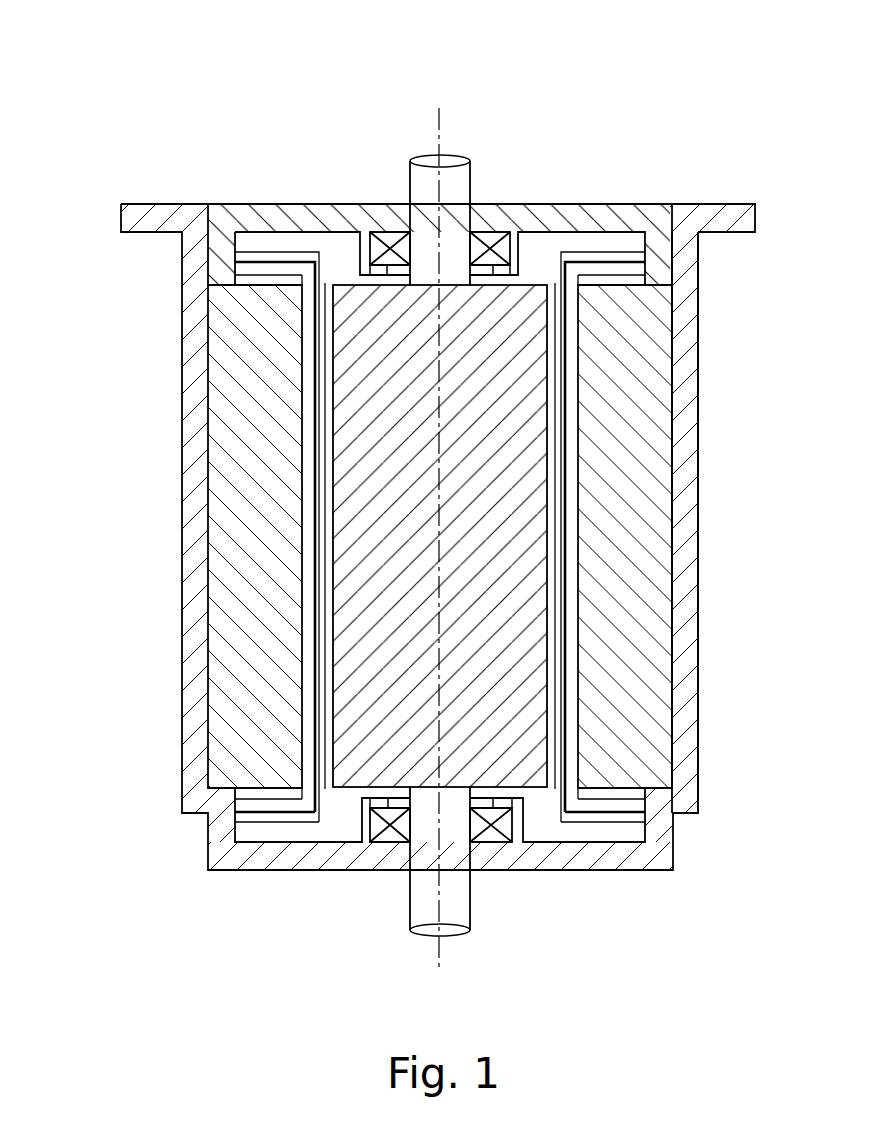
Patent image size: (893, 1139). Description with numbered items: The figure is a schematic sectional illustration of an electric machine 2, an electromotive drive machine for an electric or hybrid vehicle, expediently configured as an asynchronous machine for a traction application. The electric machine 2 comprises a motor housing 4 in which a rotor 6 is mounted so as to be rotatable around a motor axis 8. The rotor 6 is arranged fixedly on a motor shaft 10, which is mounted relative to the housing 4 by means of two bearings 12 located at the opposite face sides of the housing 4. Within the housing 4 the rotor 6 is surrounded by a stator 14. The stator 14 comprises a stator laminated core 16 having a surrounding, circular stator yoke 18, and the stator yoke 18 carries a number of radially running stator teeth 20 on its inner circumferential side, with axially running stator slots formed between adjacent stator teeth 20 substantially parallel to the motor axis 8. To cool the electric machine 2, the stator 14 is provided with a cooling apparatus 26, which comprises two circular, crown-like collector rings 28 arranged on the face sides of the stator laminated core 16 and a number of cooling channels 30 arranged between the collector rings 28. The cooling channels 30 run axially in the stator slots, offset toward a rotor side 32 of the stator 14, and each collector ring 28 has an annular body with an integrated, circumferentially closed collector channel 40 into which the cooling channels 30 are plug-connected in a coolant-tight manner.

The electric machine 2 is at (672, 68).
The housing 4 is at (182, 478).
The rotor 6 is at (367, 767).
The motor axis 8 is at (440, 122).
The motor shaft 10 is at (457, 902).
The bearing 12 is at (505, 240).
The stator 14 is at (660, 568).
The stator laminated core 16 is at (507, 536).
The stator yoke 18 is at (672, 472).
The stator tooth 20 is at (612, 673).
The cooling apparatus 26 is at (630, 255).
The collector ring 28 is at (474, 478).
The cooling channel 30 is at (580, 341).
The rotor side 32 is at (323, 530).
The collector channel 40 is at (640, 267).